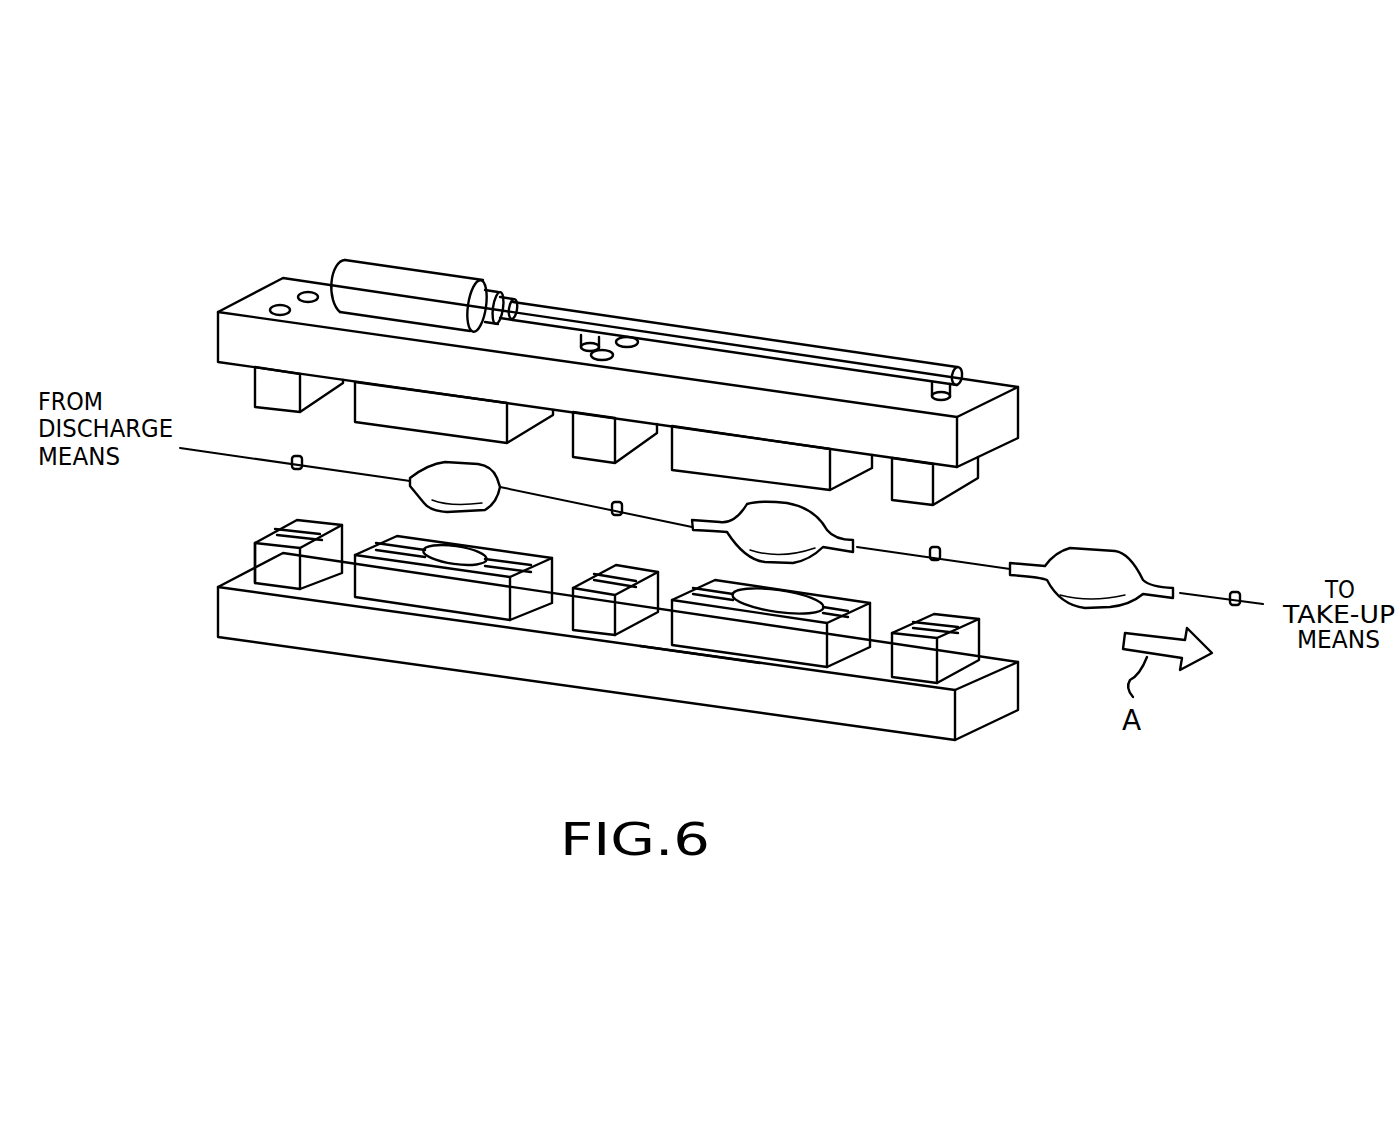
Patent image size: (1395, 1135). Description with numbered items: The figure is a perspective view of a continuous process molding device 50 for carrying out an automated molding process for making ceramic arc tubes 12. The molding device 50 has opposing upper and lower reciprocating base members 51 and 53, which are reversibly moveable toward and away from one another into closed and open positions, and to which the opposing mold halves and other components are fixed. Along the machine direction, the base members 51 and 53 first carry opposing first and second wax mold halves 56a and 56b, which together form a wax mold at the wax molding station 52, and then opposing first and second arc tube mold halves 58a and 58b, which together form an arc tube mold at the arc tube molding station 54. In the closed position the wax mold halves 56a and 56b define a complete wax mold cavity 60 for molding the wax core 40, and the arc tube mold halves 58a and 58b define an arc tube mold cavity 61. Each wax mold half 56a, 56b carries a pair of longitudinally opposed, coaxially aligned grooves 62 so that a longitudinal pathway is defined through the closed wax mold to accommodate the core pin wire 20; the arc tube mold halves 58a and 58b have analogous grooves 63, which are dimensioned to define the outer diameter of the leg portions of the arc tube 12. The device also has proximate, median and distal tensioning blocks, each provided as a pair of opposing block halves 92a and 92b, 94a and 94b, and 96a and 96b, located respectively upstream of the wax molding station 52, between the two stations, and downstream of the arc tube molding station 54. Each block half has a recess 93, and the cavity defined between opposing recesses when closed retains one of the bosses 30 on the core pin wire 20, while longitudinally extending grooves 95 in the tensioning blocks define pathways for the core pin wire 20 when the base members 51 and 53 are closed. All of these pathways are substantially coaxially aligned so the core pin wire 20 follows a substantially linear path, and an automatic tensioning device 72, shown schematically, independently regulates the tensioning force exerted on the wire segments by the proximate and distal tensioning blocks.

The continuous process molding device 50 is at (315, 215).
The first reciprocating base member 51 is at (990, 382).
The second reciprocating base member 53 is at (987, 702).
The wax molding station 52 is at (411, 598).
The arc tube molding station 54 is at (695, 632).
The automatic tensioning device 72 is at (415, 268).
The wax core 40 is at (490, 473).
The ceramic arc tube 12 is at (1113, 548).
The core pin wire 20 is at (1204, 592).
The boss 30 is at (297, 463).
The first wax mold half 56a is at (462, 412).
The second wax mold half 56b is at (492, 612).
The first arc tube mold half 58a is at (772, 447).
The second arc tube mold half 58b is at (740, 642).
The wax mold cavity 60 is at (463, 558).
The arc tube mold cavity 61 is at (797, 603).
The grooves of wax mold halves 62 is at (377, 550).
The grooves of arc tube mold halves 63 is at (847, 613).
The first block half of proximate tensioning block 92a is at (265, 387).
The second block half of proximate tensioning block 92b is at (285, 577).
The recess 93 is at (253, 562).
The first block half of median tensioning block 94a is at (628, 437).
The second block half of median tensioning block 94b is at (627, 617).
The grooves of tensioning blocks 95 is at (287, 536).
The first block half of distal tensioning block 96a is at (967, 478).
The second block half of distal tensioning block 96b is at (915, 663).